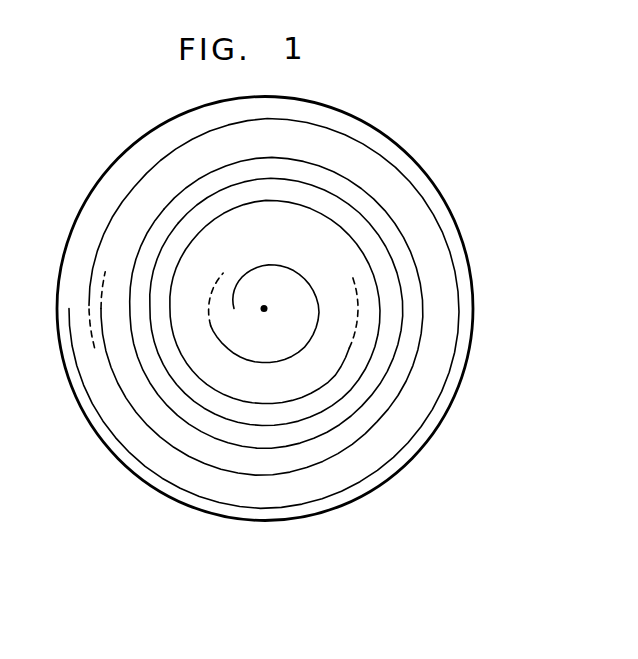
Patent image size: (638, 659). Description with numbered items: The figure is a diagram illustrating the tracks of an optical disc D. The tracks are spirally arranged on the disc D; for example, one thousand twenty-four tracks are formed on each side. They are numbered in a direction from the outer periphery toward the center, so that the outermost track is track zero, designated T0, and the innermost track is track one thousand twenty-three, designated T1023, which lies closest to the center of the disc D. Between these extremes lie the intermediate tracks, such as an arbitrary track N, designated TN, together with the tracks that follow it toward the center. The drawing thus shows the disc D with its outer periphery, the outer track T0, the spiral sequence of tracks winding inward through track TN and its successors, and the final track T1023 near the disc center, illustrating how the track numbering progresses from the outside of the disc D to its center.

The disc D is at (402, 145).
The track 0 T0 is at (430, 204).
The track N TN is at (420, 270).
The track 1023 T1023 is at (290, 358).